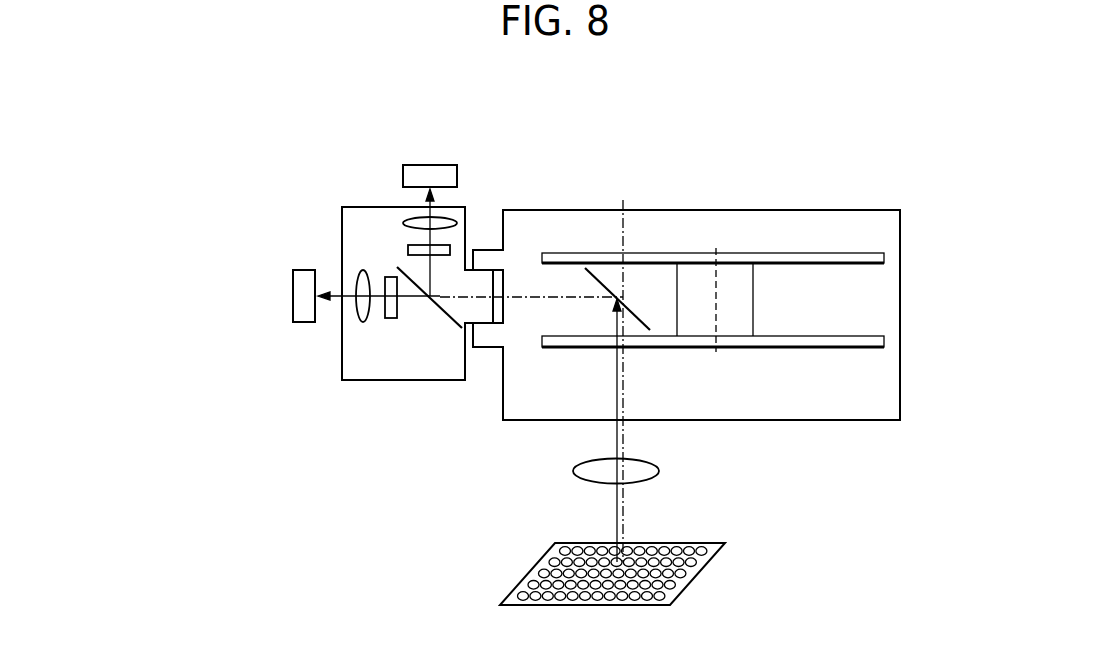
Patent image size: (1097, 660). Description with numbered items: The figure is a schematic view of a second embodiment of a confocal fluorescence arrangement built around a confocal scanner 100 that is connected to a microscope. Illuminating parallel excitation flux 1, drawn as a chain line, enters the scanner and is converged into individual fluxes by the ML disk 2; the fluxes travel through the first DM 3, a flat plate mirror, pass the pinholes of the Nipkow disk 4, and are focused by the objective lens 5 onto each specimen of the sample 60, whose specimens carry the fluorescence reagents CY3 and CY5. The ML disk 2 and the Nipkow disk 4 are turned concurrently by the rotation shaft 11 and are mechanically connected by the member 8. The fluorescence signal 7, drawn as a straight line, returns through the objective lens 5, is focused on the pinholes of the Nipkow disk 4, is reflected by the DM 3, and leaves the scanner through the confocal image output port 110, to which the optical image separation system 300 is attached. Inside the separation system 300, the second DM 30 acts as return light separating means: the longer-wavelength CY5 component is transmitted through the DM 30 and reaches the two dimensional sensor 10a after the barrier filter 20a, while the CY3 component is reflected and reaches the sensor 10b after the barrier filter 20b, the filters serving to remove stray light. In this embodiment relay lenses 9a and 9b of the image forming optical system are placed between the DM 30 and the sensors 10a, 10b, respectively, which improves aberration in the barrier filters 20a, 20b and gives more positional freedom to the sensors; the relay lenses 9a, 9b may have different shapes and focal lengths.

The illuminating parallel excitation flux 1 is at (630, 220).
The ML disk 2 is at (858, 258).
The first DM 3 is at (610, 287).
The Nipkow disk 4 is at (858, 345).
The objective lens 5 is at (660, 472).
The fluorescence signal 7 is at (525, 300).
The member 8 is at (738, 278).
The relay lens 9a is at (357, 318).
The relay lens 9b is at (452, 220).
The two dimensional sensor 10a is at (292, 278).
The two dimensional sensor 10b is at (405, 165).
The rotation shaft 11 is at (716, 350).
The barrier filter 20a is at (390, 322).
The barrier filter 20b is at (452, 248).
The second DM 30 is at (405, 271).
The sample 60 is at (707, 565).
The confocal scanner 100 is at (900, 280).
The confocal image output port 110 is at (483, 338).
The optical image separation system 300 is at (422, 383).